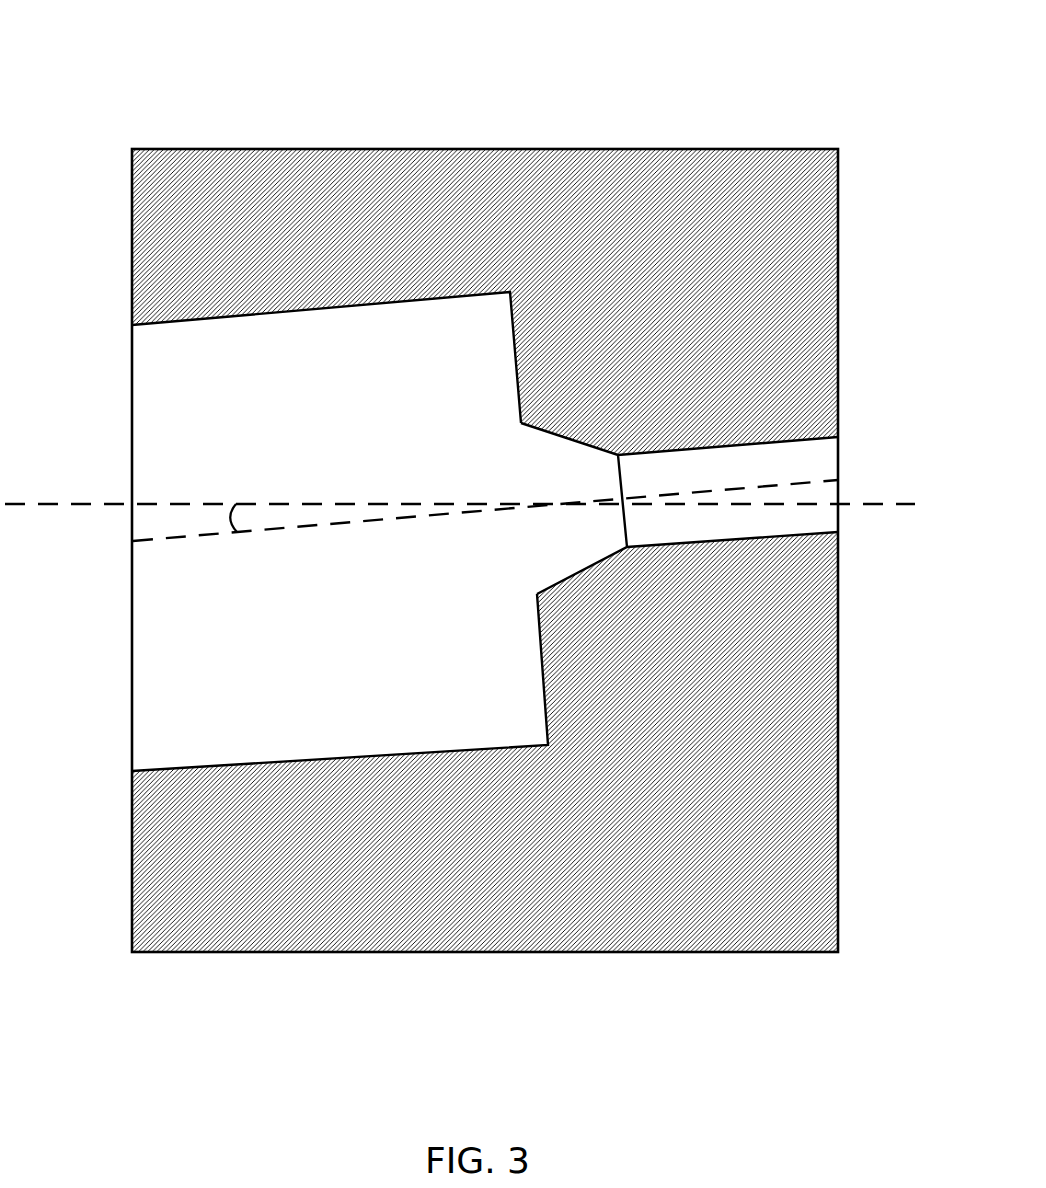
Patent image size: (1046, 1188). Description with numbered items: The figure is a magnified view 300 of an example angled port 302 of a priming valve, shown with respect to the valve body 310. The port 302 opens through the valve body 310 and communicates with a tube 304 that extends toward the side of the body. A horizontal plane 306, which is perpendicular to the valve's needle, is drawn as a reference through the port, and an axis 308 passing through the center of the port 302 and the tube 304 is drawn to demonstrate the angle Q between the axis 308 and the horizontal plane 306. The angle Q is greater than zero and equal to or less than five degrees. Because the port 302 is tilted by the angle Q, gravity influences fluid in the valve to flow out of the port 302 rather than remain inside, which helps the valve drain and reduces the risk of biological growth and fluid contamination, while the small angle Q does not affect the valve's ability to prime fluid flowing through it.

The magnified view 300 is at (464, 482).
The angled port 302 is at (155, 384).
The tube 304 is at (815, 462).
The horizontal plane 306 is at (323, 503).
The axis 308 is at (355, 522).
The valve body 310 is at (290, 149).
The angle Q is at (228, 520).